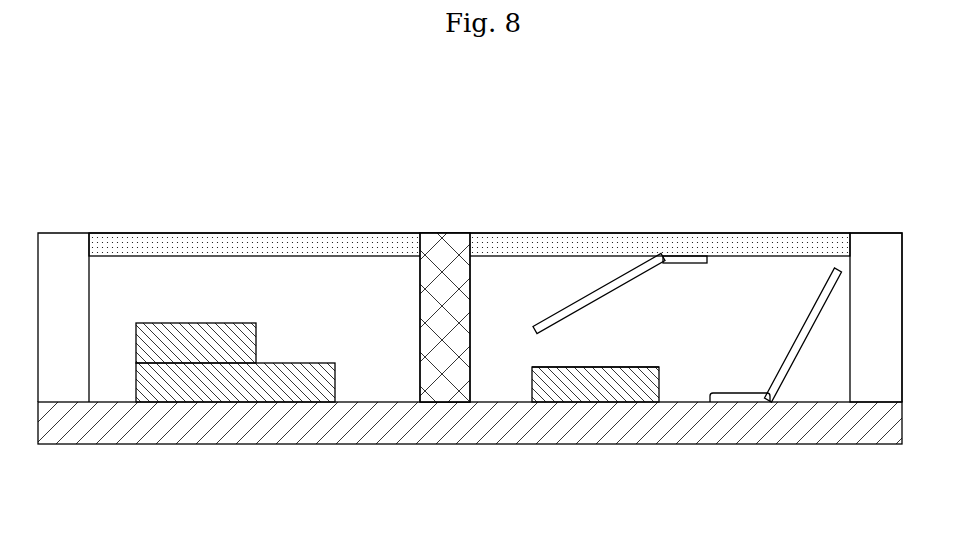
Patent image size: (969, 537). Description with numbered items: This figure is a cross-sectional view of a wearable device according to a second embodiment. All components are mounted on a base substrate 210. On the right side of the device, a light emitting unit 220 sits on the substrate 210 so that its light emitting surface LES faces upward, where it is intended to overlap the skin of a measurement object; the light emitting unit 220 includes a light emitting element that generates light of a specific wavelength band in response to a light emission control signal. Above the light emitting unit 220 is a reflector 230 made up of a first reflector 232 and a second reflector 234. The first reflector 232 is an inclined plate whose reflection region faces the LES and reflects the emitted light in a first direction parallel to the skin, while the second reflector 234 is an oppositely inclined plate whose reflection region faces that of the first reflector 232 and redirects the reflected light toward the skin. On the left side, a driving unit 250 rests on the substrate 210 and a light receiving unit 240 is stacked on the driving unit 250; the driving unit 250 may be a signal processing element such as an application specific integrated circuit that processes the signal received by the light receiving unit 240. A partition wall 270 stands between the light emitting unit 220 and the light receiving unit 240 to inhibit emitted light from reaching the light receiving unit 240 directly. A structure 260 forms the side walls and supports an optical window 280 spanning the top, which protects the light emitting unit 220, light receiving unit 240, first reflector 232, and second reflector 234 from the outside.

The substrate 210 is at (382, 425).
The light emitting unit 220 is at (590, 385).
The light emitting surface LES is at (613, 365).
The reflector 230 is at (687, 300).
The first reflector 232 is at (567, 307).
The second reflector 234 is at (740, 397).
The light receiving unit 240 is at (170, 345).
The driving unit 250 is at (252, 383).
The structure 260 is at (877, 248).
The partition wall 270 is at (444, 246).
The optical window 280 is at (254, 246).